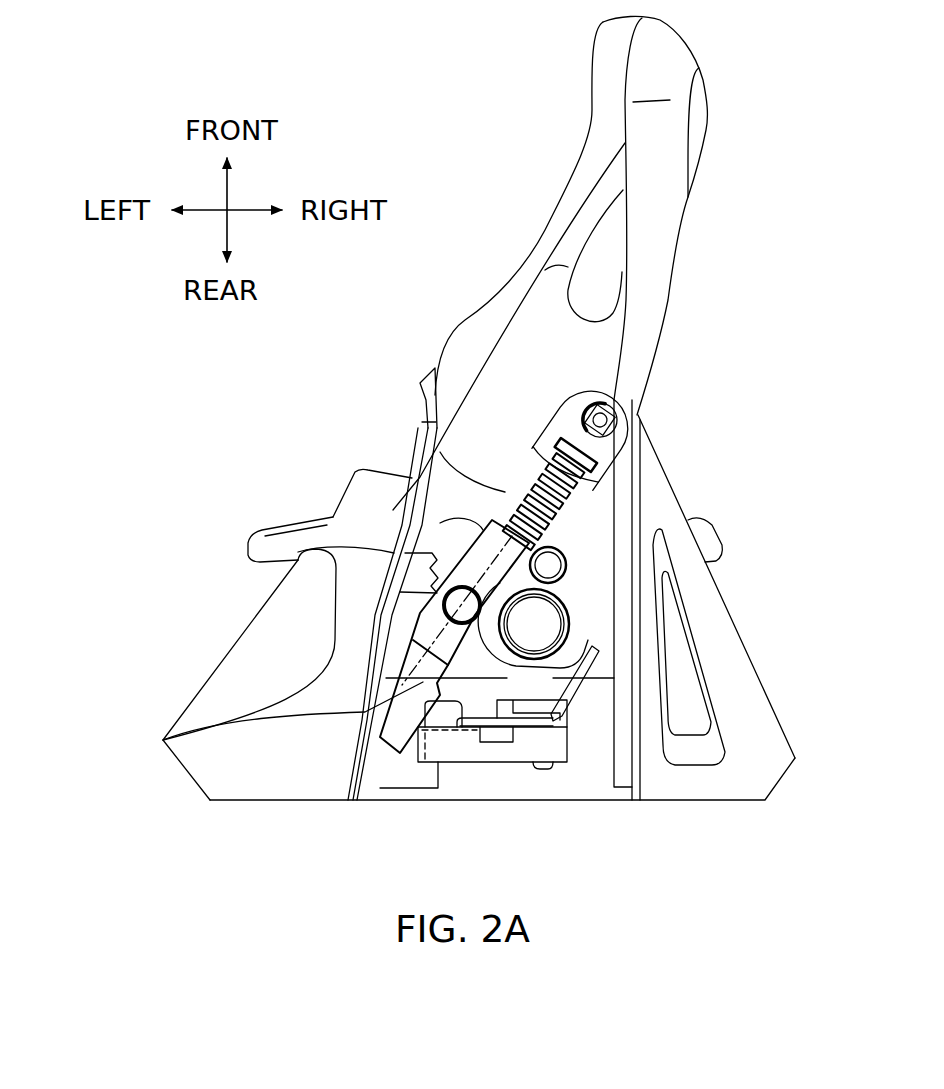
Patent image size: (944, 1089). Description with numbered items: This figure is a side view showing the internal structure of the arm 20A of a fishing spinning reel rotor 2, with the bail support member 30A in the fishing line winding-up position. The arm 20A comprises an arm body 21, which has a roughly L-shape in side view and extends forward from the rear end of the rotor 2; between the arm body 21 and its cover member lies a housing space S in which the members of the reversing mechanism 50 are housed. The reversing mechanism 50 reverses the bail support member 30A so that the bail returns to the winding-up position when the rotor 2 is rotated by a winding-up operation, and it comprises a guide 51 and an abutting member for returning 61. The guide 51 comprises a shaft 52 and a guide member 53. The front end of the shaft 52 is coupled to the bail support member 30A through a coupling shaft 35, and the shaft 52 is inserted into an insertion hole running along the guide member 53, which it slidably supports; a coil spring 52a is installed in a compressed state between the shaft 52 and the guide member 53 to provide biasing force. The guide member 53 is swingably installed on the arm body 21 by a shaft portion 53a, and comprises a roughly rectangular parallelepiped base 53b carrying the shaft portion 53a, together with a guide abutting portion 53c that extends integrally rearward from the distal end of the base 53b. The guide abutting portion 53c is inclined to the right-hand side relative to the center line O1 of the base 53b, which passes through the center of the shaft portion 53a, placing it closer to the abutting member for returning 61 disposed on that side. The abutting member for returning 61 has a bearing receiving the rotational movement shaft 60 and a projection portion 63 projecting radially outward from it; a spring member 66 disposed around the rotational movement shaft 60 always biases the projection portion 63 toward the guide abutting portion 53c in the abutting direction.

The rotor 2 is at (739, 257).
The bail support member 30A is at (500, 305).
The arm body 21 is at (437, 497).
The guide 51 is at (432, 504).
The shaft 52 is at (508, 493).
The coil spring 52a is at (553, 477).
The guide member 53 is at (432, 504).
The shaft portion 53a is at (413, 630).
The base 53b is at (345, 537).
The guide abutting portion 53c is at (275, 712).
The housing space S is at (410, 586).
The arm 20A is at (233, 662).
The center line O1 is at (352, 733).
The coupling shaft 35 is at (618, 428).
The reversing mechanism 50 is at (612, 542).
The spring member 66 is at (593, 660).
The rotational movement shaft 60 is at (468, 750).
The abutting member for returning 61 is at (508, 755).
The projection portion 63 is at (437, 749).